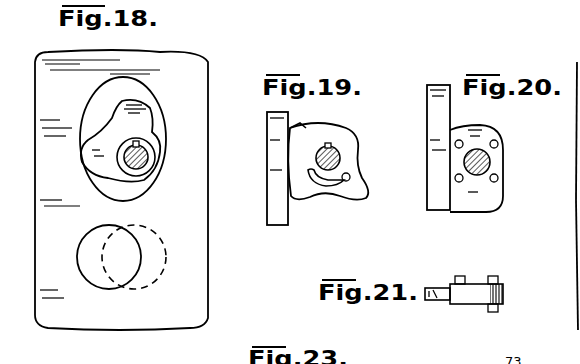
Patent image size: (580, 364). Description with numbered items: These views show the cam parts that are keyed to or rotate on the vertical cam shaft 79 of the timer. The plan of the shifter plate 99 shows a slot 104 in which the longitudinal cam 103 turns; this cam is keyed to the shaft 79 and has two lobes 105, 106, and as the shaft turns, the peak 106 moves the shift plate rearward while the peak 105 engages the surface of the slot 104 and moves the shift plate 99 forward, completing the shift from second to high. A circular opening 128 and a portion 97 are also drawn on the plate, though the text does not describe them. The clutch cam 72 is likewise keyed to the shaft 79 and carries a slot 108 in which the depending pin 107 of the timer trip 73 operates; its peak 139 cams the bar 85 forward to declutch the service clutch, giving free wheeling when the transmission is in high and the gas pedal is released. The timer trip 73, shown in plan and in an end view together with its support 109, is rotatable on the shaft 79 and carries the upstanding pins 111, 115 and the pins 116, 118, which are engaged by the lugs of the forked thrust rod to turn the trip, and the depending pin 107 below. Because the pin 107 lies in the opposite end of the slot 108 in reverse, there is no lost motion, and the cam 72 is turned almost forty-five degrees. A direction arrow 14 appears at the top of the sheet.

In FIG. 20, the arrow indicator 14 is at (468, 3).
In FIG. 19, the clutch cam 72 is at (352, 154).
In FIG. 20, the timer trip 73 is at (490, 198).
In FIG. 21, the timer trip 73 is at (494, 296).
In FIG. 18, the vertical cam shaft 79 is at (148, 153).
In FIG. 19, the vertical cam shaft 79 is at (336, 150).
In FIG. 19, the bar 85 is at (276, 212).
In FIG. 18, the plate 97 is at (141, 359).
In FIG. 18, the shifter plate 99 is at (197, 220).
In FIG. 18, the longitudinal cam 103 is at (140, 130).
In FIG. 18, the slot 104 is at (82, 112).
In FIG. 18, the lobe 105 is at (92, 156).
In FIG. 18, the lobe 106 is at (138, 112).
In FIG. 19, the depending pin 107 is at (347, 182).
In FIG. 20, the depending pin 107 is at (505, 186).
In FIG. 21, the depending pin 107 is at (491, 310).
In FIG. 19, the slot 108 is at (322, 182).
In FIG. 20, the support bar 109 is at (428, 197).
In FIG. 21, the support bar 109 is at (436, 297).
In FIG. 20, the upstanding pin 111 is at (497, 177).
In FIG. 21, the upstanding pin 111 is at (495, 277).
In FIG. 20, the upstanding pin 115 is at (460, 182).
In FIG. 21, the upstanding pin 115 is at (462, 277).
In FIG. 20, the pin 116 is at (457, 142).
In FIG. 20, the pin 118 is at (496, 145).
In FIG. 18, the circular opening 128 is at (140, 245).
In FIG. 19, the peak 139 is at (300, 124).